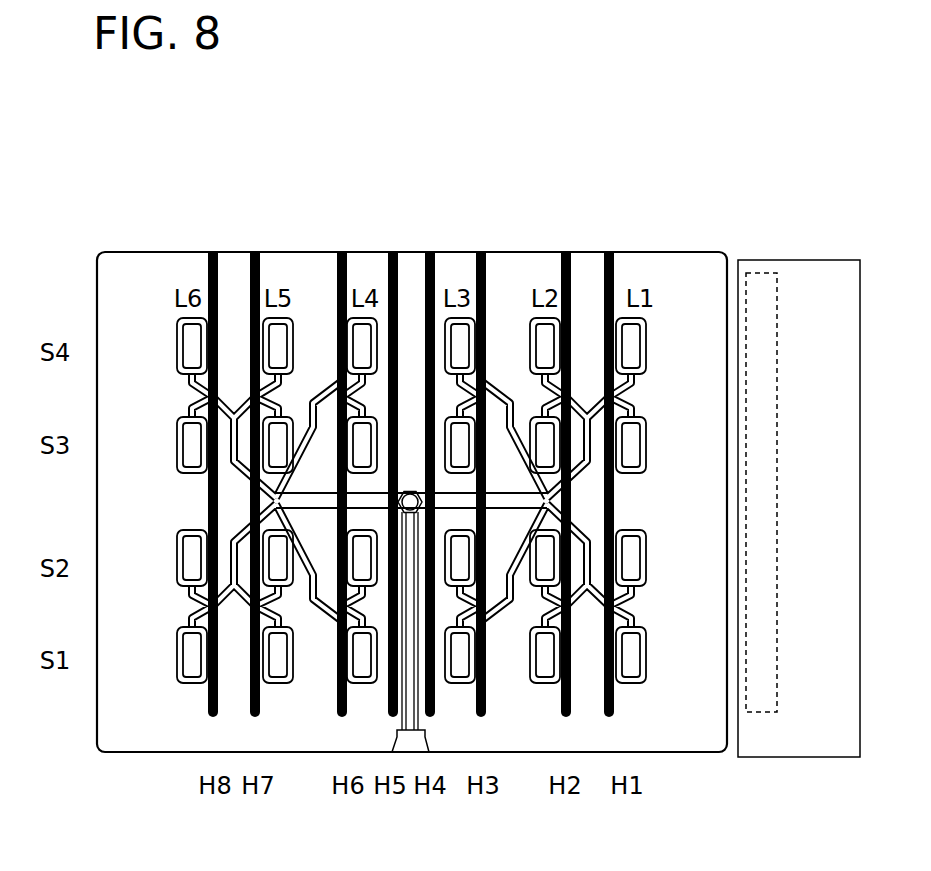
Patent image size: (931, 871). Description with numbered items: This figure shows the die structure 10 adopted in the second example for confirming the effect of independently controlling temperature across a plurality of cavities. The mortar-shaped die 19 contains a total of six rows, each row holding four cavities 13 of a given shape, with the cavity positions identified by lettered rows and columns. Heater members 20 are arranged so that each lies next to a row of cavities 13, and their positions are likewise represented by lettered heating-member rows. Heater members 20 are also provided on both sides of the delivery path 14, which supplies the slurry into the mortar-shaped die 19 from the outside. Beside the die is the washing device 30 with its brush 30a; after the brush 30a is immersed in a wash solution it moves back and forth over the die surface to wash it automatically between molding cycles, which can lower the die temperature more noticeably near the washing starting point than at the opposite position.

The touch panel device 10 is at (609, 173).
The cavity 13 is at (632, 350).
The delivery path 14 is at (418, 718).
The mortar-shaped die 19 is at (105, 528).
The heater member 20 is at (213, 251).
The washing device 30 is at (821, 270).
The brush 30a is at (760, 272).